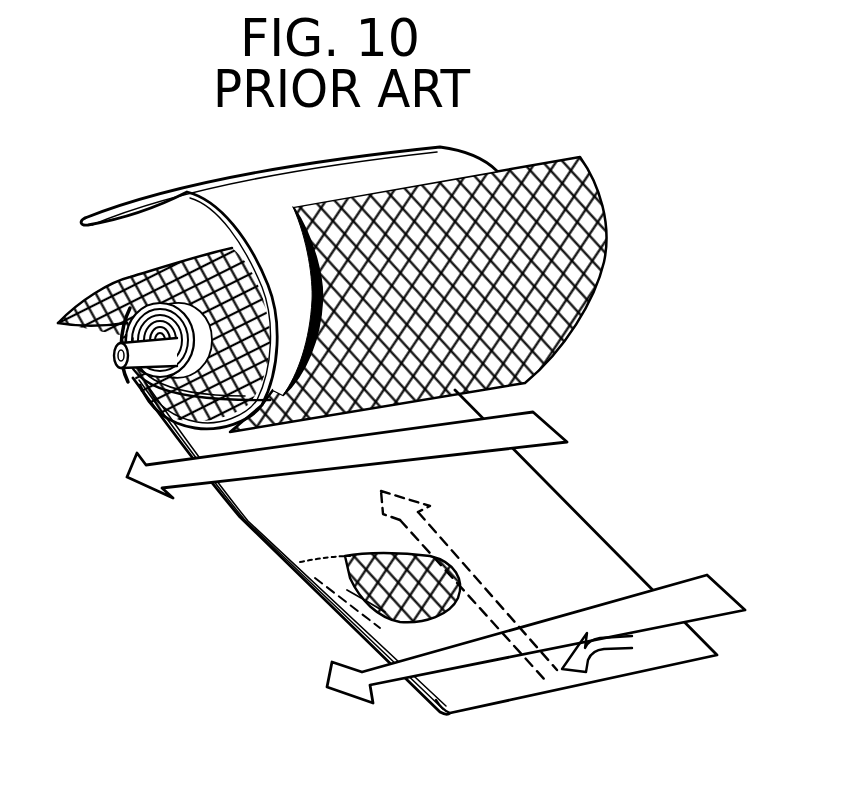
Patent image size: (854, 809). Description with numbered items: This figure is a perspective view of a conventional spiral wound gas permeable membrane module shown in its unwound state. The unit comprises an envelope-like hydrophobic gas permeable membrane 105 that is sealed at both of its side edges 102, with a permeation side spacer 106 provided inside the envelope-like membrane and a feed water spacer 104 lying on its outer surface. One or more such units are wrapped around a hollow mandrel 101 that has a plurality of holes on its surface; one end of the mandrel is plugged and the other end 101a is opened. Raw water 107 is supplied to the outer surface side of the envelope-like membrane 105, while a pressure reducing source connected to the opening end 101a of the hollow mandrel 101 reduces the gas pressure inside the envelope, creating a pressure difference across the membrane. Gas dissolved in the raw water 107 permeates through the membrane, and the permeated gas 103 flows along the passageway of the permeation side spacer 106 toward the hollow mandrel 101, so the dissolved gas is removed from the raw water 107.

The hollow mandrel 101 is at (125, 375).
The opened end of hollow mandrel 101a is at (114, 356).
The side edges 102 is at (425, 713).
The permeated gas 103 is at (443, 542).
The feed water spacer 104 is at (603, 228).
The envelope-like hydrophobic gas permeable membrane 105 is at (457, 163).
The permeation side spacer 106 is at (340, 604).
The raw water 107 is at (556, 430).